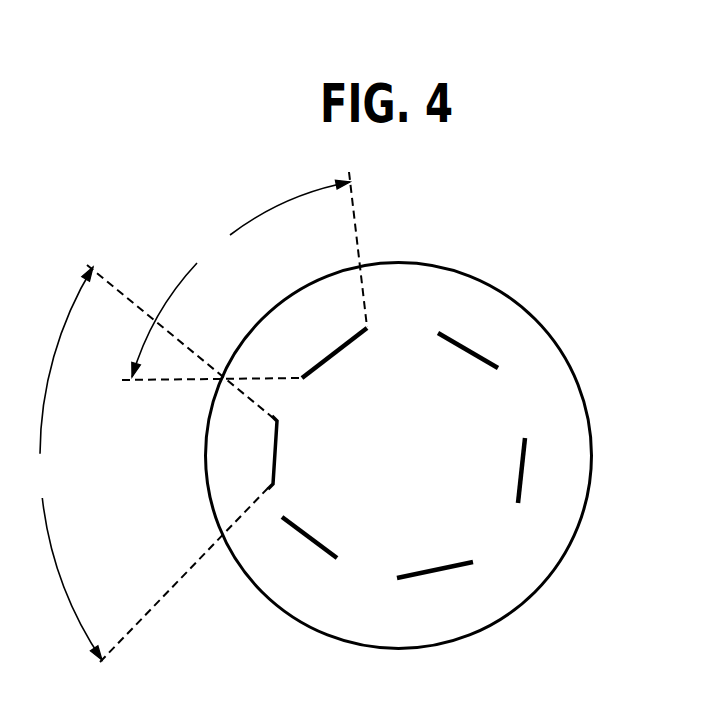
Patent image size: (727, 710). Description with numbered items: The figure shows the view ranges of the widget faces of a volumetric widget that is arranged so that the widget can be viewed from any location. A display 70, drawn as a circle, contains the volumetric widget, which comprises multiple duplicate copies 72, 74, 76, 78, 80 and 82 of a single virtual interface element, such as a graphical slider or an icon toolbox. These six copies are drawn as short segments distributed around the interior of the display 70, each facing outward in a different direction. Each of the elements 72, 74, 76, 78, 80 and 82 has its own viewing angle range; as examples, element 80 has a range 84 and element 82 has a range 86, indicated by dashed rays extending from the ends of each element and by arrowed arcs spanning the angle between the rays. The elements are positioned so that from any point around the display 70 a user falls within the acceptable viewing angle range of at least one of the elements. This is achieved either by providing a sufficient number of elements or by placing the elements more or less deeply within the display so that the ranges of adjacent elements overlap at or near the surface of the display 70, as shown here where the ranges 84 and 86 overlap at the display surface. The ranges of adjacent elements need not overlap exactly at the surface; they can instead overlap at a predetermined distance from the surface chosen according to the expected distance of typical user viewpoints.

The display 70 is at (560, 350).
The duplicate copy of a virtual interface element 72 is at (470, 358).
The duplicate copy of a virtual interface element 74 is at (522, 452).
The duplicate copy of a virtual interface element 76 is at (448, 565).
The duplicate copy of a virtual interface element 78 is at (303, 527).
The duplicate copy of a virtual interface element 80 is at (275, 447).
The duplicate copy of a virtual interface element 82 is at (328, 365).
The viewing angle range 84 is at (148, 463).
The viewing angle range 86 is at (244, 276).